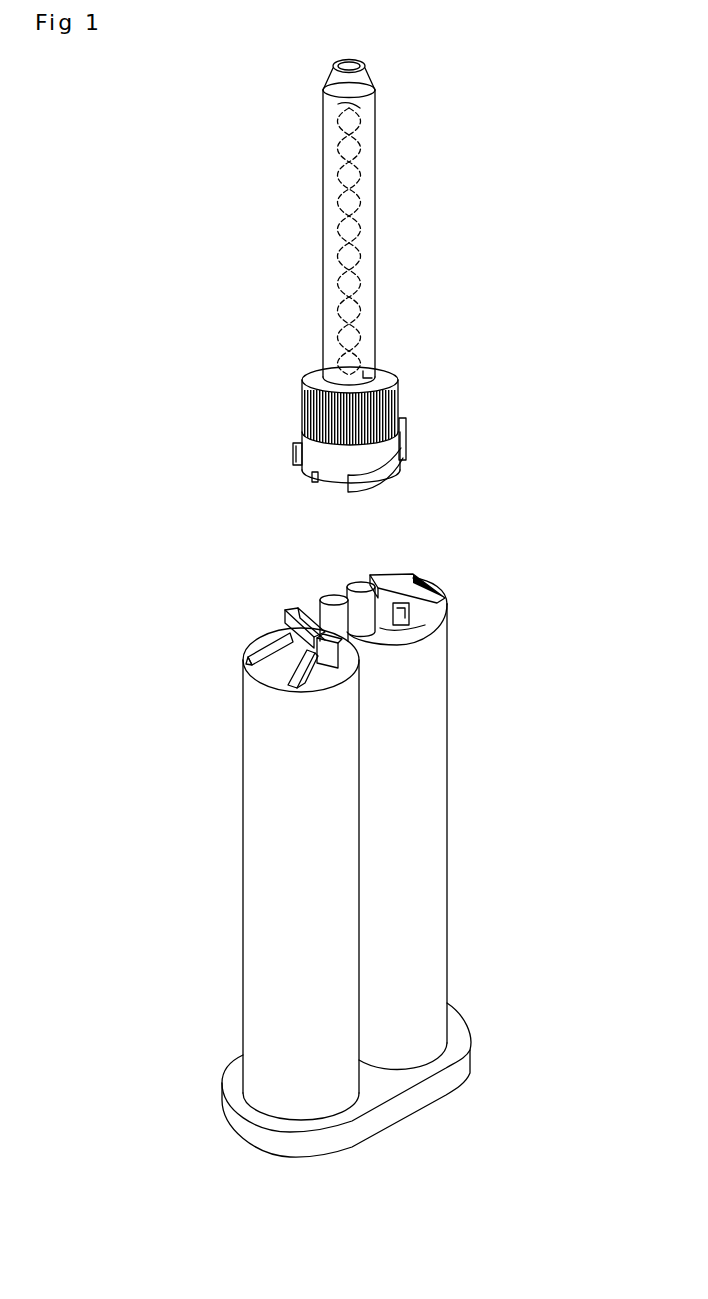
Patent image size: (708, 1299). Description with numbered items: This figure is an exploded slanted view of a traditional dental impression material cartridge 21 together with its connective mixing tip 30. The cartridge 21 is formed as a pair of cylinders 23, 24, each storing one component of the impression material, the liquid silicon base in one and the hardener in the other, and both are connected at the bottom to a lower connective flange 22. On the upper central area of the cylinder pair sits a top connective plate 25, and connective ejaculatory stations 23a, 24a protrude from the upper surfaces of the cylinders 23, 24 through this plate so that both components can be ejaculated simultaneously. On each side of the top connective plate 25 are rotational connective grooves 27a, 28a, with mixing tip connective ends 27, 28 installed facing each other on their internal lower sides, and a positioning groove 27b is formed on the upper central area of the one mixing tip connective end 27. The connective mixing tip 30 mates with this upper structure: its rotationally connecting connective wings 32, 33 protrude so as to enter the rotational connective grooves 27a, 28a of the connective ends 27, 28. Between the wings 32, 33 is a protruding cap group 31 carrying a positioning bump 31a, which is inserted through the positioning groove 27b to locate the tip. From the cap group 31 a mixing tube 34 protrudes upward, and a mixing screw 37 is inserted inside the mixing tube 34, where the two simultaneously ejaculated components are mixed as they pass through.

The impression material cartridge 21 is at (478, 937).
The lower connective flange 22 is at (420, 1097).
The cylinder 23 is at (275, 898).
The connective ejaculatory station 23a is at (332, 597).
The cylinder 24 is at (420, 872).
The connective ejaculatory station 24a is at (362, 582).
The top connective plate 25 is at (407, 643).
The mixing tip connective end 27 is at (258, 668).
The rotational connective groove 27a is at (370, 655).
The positioning groove 27b is at (297, 610).
The mixing tip connective end 28 is at (405, 578).
The rotational connective groove 28a is at (393, 628).
The connective mixing tip 30 is at (408, 355).
The cap group 31 is at (297, 445).
The positioning bump 31a is at (312, 477).
The connective wing 32 is at (387, 483).
The connective wing 33 is at (293, 457).
The mixing tube 34 is at (323, 229).
The mixing screw 37 is at (375, 229).